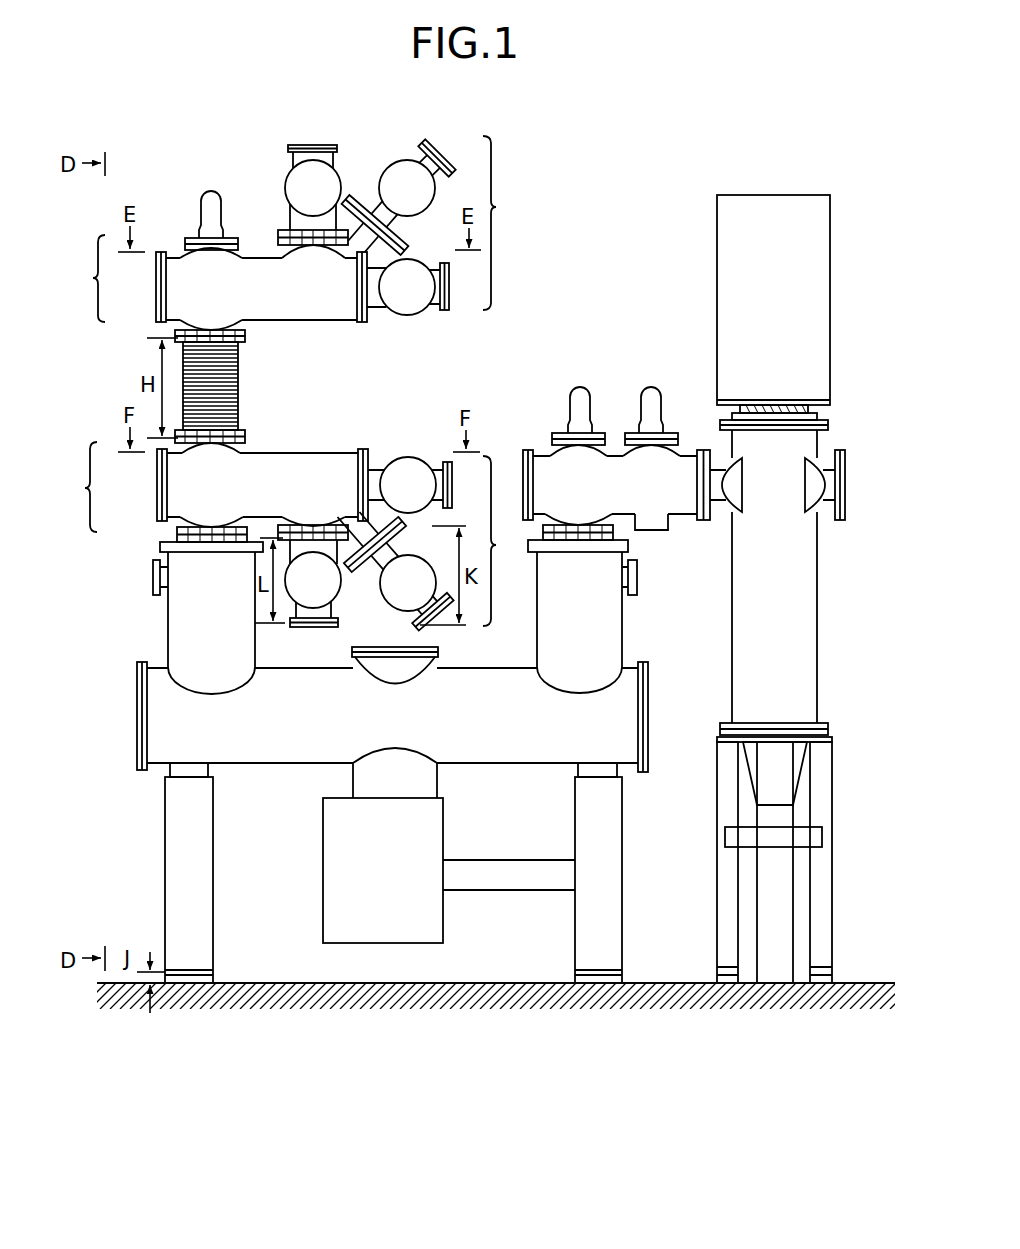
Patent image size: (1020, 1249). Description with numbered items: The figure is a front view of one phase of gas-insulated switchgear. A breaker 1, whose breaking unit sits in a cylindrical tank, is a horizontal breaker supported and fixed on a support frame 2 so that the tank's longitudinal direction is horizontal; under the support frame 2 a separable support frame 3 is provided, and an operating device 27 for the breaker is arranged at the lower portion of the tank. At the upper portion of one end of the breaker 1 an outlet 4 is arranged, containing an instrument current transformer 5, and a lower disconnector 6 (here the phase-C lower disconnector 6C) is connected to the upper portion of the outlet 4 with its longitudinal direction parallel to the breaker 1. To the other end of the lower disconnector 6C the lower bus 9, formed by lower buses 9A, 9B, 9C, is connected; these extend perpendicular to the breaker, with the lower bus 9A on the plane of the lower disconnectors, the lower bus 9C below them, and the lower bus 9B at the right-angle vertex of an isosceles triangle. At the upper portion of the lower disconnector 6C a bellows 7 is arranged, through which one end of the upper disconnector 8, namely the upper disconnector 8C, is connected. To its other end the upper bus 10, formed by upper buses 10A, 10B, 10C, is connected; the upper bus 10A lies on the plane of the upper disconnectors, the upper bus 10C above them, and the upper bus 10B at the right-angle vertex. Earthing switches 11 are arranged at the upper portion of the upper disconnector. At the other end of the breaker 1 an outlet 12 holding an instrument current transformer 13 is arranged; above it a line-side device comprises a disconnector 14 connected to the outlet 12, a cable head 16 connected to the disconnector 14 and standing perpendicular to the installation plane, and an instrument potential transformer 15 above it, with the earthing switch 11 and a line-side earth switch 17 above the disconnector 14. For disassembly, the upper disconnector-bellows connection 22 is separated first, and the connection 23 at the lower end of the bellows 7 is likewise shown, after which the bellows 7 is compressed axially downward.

The breaker 1 is at (152, 730).
The support frame 2 is at (203, 850).
The support frame 3 is at (205, 977).
The outlet 4 is at (200, 663).
The instrument current transformer 5 is at (210, 602).
The lower disconnector 6 is at (217, 487).
The lower disconnector 6C is at (175, 500).
The bellows 7 is at (240, 382).
The upper disconnector 8 is at (221, 282).
The upper disconnector 8C is at (162, 292).
The lower bus 9 is at (395, 540).
The lower bus 9A is at (412, 475).
The lower bus 9B is at (412, 592).
The lower bus 9C is at (313, 598).
The upper bus 10 is at (402, 237).
The upper bus 10A is at (417, 293).
The upper bus 10B is at (393, 177).
The upper bus 10C is at (317, 172).
The earthing switch 11 is at (211, 198).
The outlet 12 is at (593, 663).
The instrument current transformer 13 is at (600, 608).
The disconnector 14 is at (550, 467).
The instrument potential transformer 15 is at (820, 298).
The cable head 16 is at (807, 610).
The line-side earth switch 17 is at (654, 397).
The upper disconnector-bellows connection 22 is at (247, 337).
The flange 23 is at (247, 436).
The operating device 27 is at (382, 932).